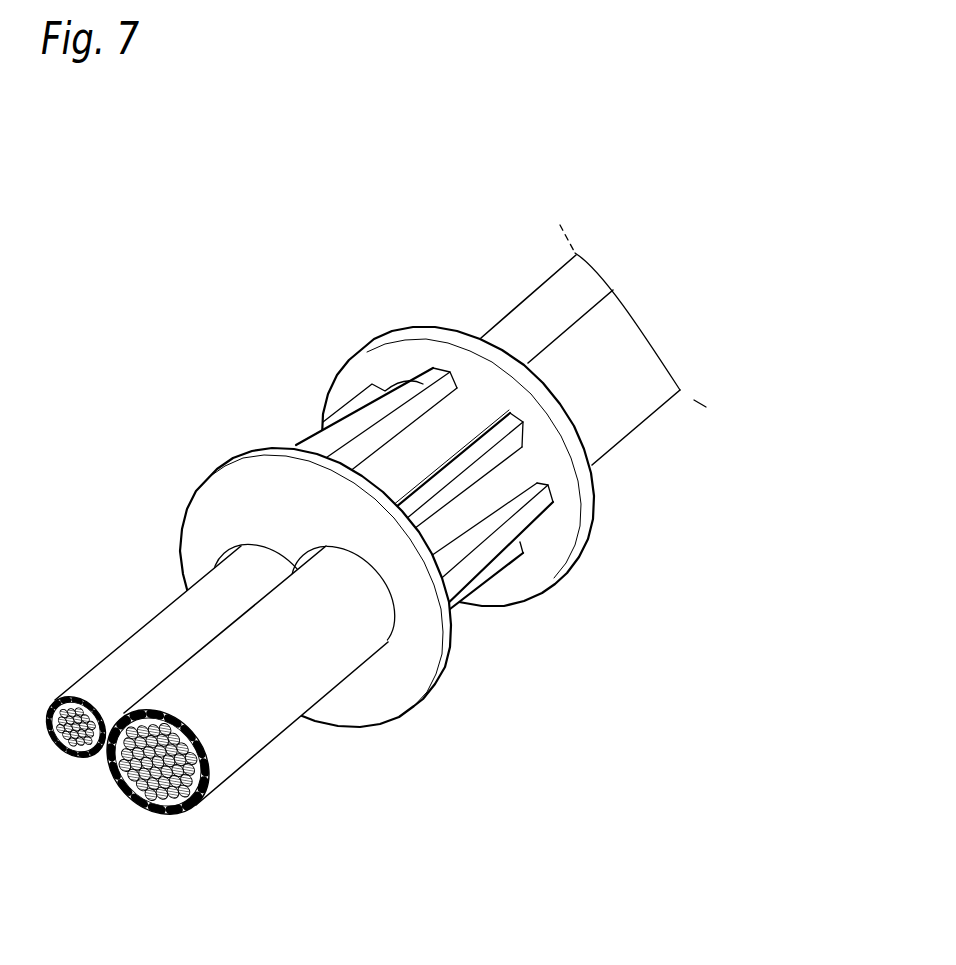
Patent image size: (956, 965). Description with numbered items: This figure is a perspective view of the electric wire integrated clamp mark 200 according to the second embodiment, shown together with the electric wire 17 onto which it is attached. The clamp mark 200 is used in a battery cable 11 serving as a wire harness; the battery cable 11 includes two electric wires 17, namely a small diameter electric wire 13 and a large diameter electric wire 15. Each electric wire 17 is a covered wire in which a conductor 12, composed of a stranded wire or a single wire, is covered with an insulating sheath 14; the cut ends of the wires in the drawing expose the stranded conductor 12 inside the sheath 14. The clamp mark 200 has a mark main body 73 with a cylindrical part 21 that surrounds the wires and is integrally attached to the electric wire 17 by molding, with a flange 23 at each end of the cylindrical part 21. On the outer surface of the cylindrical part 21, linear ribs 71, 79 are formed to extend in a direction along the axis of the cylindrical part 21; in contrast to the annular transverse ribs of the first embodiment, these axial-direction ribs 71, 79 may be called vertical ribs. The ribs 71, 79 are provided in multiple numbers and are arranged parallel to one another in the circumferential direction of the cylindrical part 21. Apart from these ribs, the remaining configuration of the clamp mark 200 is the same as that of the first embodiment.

The battery cable 11 is at (597, 143).
The conductor 12 is at (153, 810).
The small diameter electric wire 13 is at (541, 309).
The insulating sheath 14 is at (242, 768).
The large diameter electric wire 15 is at (619, 334).
The electric wire 17 is at (653, 185).
The cylindrical part 21 is at (495, 503).
The flange 23 is at (593, 538).
The linear rib 71 is at (423, 384).
The mark main body 73 is at (310, 428).
The linear rib 79 is at (495, 435).
The electric wire integrated clamp mark 200 is at (435, 304).